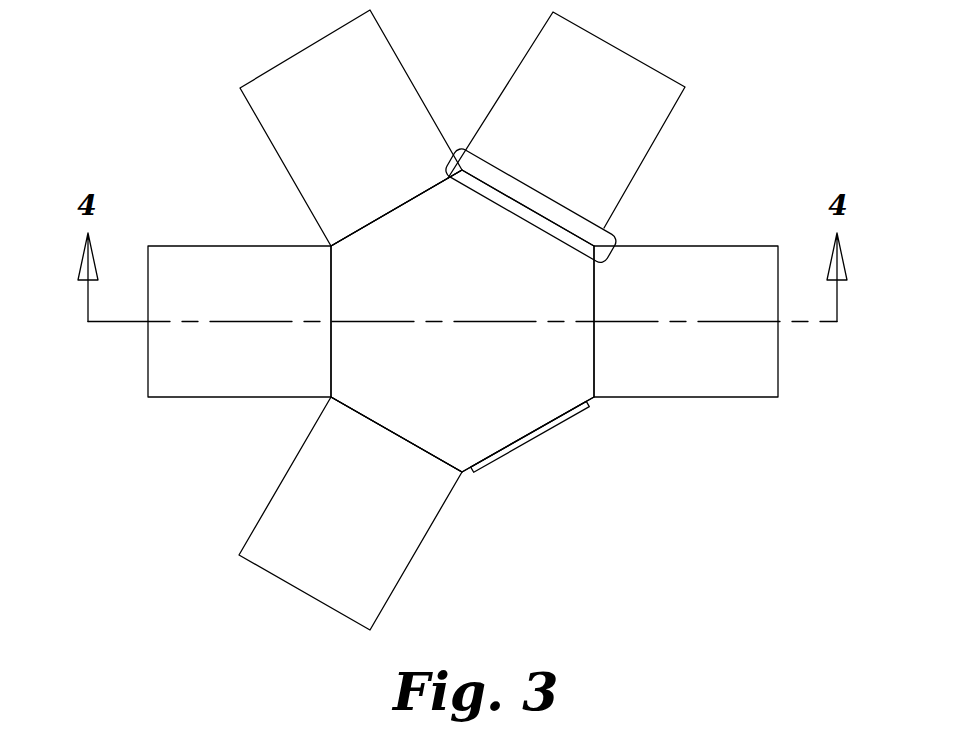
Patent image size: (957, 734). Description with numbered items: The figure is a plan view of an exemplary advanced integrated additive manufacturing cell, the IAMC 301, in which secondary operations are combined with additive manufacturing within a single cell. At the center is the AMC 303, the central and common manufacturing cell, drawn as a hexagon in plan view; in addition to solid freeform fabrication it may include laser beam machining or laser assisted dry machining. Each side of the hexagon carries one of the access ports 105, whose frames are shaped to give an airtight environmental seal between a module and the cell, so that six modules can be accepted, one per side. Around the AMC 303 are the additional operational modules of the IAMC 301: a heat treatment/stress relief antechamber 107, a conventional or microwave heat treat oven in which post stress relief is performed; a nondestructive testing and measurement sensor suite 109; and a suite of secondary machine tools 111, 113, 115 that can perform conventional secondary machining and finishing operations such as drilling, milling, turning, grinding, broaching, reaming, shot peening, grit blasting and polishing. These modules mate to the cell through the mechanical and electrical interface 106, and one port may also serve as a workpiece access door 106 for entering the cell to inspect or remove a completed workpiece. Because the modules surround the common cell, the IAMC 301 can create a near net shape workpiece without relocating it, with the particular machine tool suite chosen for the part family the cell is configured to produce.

The advanced IAMC 301 is at (160, 100).
The AMC 303 is at (473, 298).
The access ports 105 is at (398, 209).
The mechanical and electrical interface 106 is at (613, 450).
The heat treatment/stress relief antechamber 107 is at (745, 372).
The nondestructive testing and measurement sensor suite 109 is at (602, 101).
The secondary machine tool suite module 111 is at (360, 101).
The secondary machine tool suite module 113 is at (215, 294).
The secondary machine tool suite module 115 is at (372, 572).